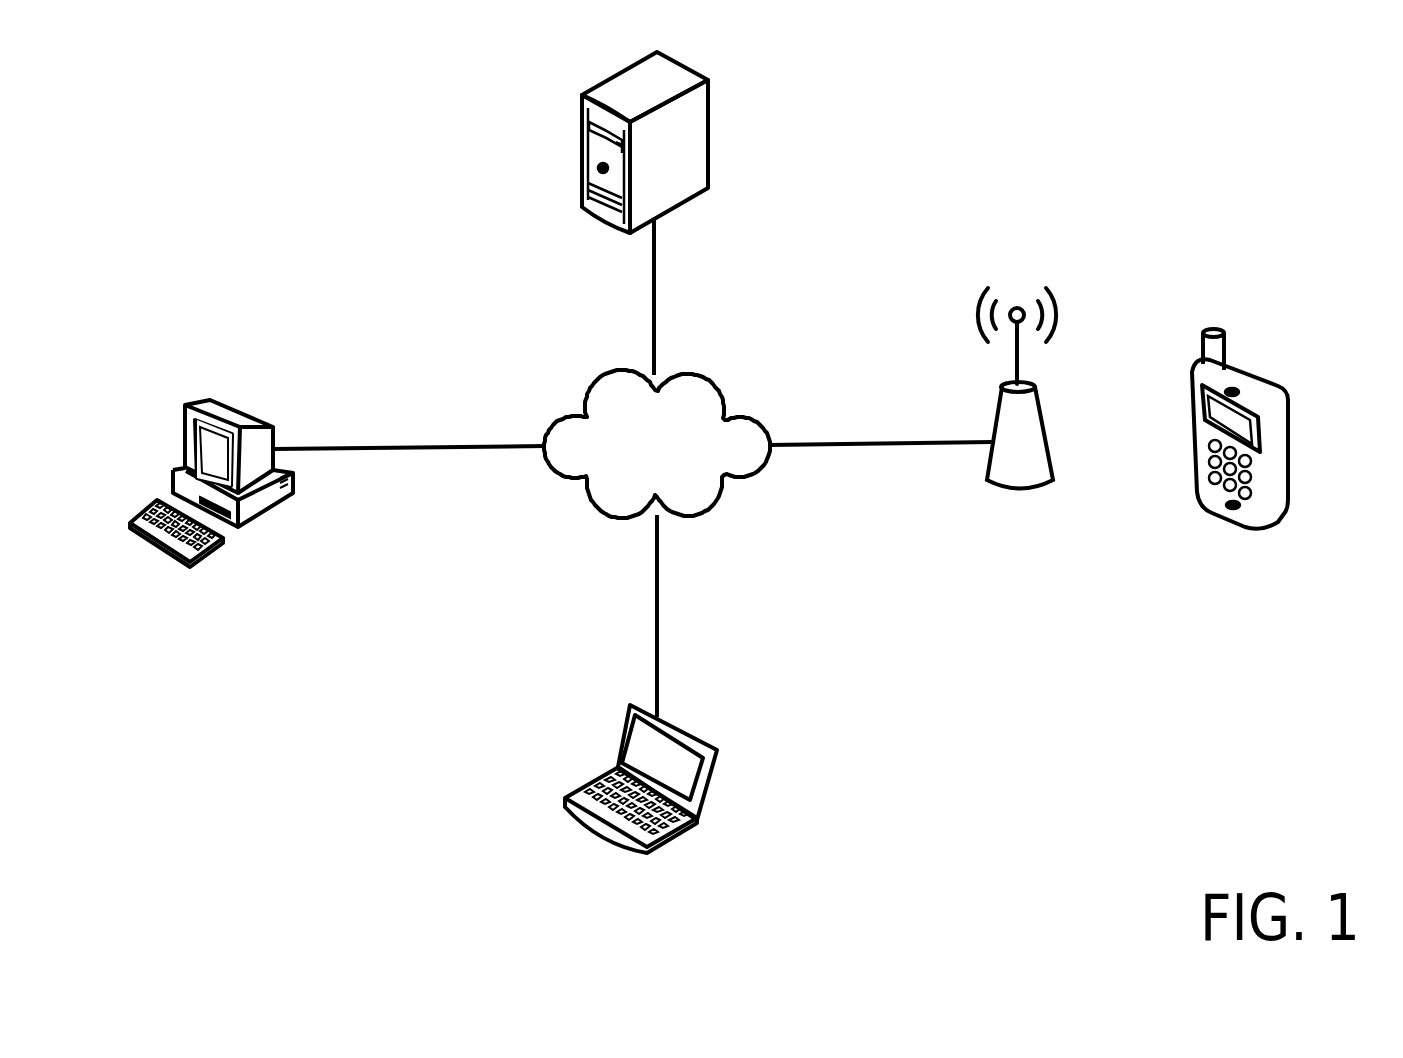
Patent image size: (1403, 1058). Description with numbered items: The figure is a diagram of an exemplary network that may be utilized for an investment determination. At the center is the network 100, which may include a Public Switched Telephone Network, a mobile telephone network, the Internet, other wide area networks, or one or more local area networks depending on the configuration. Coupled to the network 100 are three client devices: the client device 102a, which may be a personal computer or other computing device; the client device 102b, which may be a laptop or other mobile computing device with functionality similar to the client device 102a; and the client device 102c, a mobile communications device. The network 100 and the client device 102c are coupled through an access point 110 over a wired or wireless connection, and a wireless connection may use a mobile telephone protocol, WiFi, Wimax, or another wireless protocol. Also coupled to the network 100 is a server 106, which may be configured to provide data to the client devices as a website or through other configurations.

The network 100 is at (737, 407).
The client device 102a is at (248, 410).
The client device 102b is at (710, 743).
The client device 102c is at (1270, 378).
The server 106 is at (708, 160).
The access point 110 is at (995, 410).